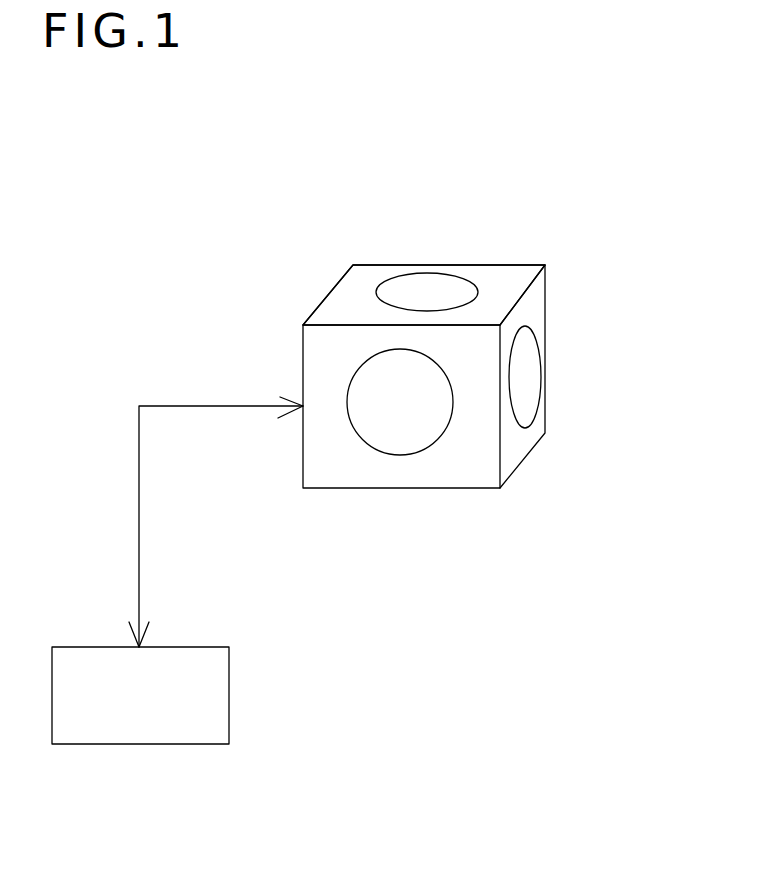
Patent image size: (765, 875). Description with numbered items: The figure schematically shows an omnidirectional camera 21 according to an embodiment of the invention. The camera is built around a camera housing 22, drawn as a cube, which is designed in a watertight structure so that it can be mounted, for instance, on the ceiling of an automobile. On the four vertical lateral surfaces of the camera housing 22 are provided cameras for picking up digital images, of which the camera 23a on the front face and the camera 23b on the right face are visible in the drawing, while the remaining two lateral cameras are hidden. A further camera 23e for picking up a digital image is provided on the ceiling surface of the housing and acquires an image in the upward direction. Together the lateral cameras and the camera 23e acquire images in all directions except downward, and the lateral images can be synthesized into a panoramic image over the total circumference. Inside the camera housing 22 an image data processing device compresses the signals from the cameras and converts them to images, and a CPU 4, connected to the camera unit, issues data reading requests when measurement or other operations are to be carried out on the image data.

The omnidirectional camera 21 is at (549, 287).
The camera housing 22 is at (318, 305).
The camera 23e is at (468, 279).
The camera 23a is at (407, 455).
The camera 23b is at (541, 370).
The CPU 4 is at (193, 647).